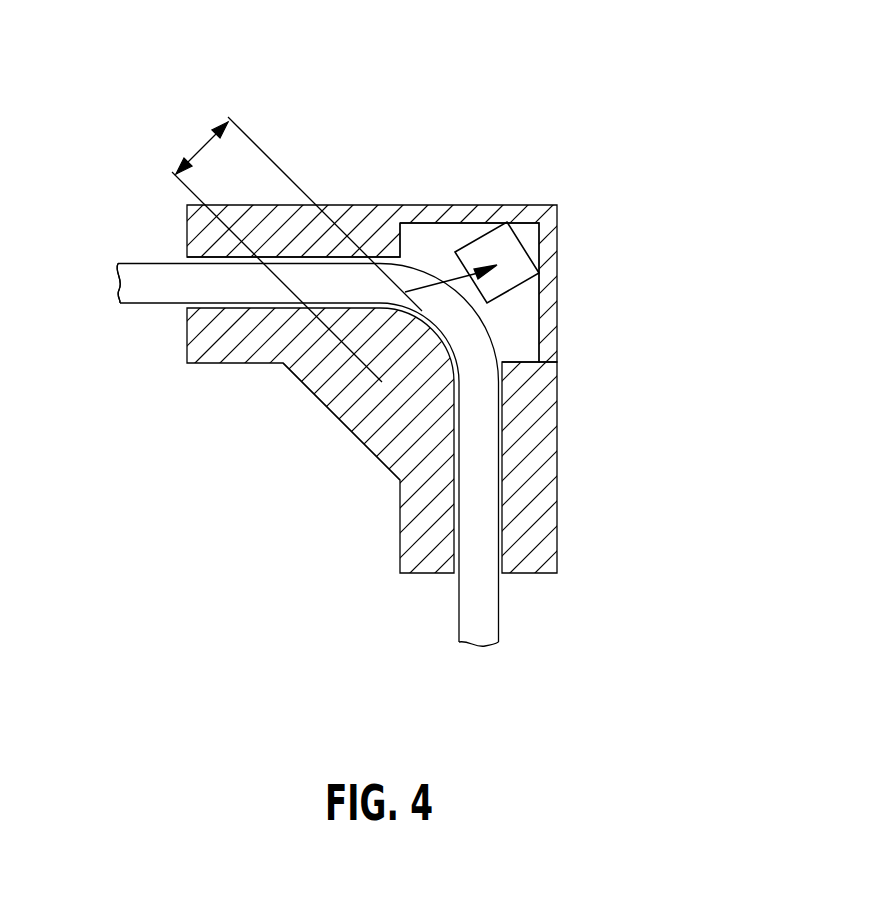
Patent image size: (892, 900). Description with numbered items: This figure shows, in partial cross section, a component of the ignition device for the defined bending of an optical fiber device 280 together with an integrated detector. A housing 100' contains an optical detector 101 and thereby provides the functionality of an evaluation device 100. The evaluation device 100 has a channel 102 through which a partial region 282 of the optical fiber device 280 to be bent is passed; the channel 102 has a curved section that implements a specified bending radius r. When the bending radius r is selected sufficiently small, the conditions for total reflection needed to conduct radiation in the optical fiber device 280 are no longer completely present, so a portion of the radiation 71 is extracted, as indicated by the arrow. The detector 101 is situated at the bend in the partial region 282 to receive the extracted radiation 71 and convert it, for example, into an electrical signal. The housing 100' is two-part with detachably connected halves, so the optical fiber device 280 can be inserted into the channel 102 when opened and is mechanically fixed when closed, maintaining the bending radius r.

The evaluation device 100 is at (446, 293).
The housing 100' is at (446, 390).
The optical detector 101 is at (512, 253).
The channel 102 is at (177, 310).
The extracted radiation 71 is at (453, 275).
The optical fiber device 280 is at (477, 608).
The partial region 282 is at (357, 494).
The bending radius r is at (297, 249).